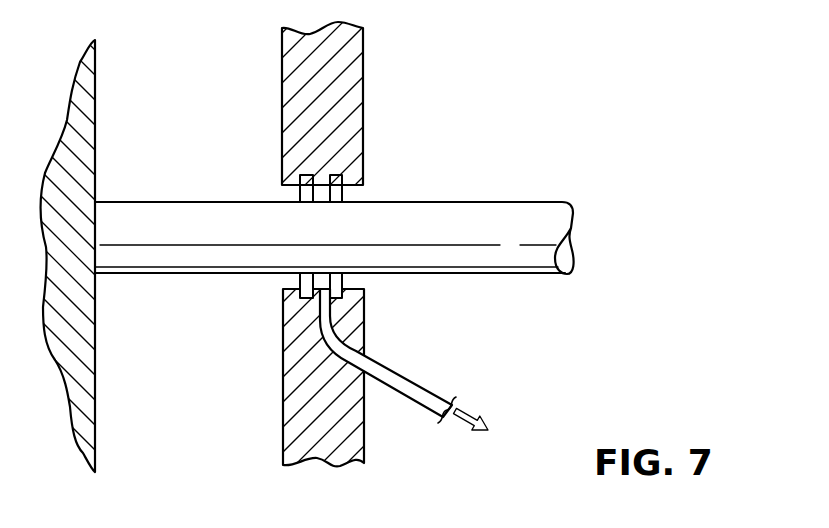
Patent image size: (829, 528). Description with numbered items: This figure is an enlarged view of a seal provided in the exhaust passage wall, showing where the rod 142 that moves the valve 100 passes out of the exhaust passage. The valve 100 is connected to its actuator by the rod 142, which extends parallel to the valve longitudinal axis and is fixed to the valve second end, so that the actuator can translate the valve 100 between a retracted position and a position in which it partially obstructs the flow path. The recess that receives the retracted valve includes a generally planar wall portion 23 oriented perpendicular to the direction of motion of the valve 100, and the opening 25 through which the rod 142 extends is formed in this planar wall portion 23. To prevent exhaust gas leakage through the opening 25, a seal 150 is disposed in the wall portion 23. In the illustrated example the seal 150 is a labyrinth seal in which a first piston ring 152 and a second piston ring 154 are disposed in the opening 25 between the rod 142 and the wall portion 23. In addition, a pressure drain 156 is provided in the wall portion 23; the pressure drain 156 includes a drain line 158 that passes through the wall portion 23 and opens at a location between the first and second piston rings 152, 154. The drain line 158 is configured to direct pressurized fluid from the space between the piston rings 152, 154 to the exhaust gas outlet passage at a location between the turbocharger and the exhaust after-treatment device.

The valve 100 is at (95, 103).
The rod 142 is at (172, 217).
The planar wall portion 23 is at (352, 80).
The opening 25 is at (355, 190).
The seal 150 is at (322, 371).
The first piston ring 152 is at (305, 303).
The second piston ring 154 is at (343, 277).
The pressure drain 156 is at (420, 359).
The drain line 158 is at (427, 402).